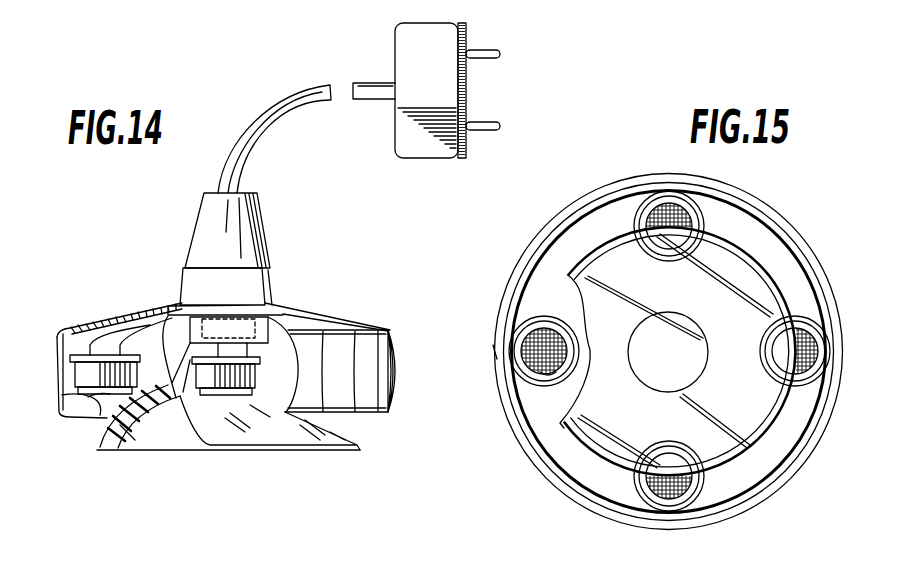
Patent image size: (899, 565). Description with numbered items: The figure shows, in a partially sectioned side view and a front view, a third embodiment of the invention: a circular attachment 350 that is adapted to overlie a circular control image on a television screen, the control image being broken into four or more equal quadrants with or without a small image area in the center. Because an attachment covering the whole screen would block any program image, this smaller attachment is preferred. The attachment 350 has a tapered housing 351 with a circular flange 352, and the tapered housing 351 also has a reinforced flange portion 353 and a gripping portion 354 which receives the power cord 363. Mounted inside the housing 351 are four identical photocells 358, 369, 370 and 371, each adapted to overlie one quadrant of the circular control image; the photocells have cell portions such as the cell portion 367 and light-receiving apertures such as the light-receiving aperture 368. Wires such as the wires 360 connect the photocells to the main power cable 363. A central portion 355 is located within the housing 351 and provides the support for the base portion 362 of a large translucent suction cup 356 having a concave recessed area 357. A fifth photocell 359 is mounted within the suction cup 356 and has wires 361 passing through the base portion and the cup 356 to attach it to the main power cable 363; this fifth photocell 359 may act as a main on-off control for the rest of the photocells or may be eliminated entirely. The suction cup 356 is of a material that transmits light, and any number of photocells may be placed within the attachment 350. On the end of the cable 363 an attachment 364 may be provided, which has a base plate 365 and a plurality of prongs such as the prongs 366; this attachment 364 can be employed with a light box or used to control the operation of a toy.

In FIG. 14, the attachment 350 is at (288, 296).
In FIG. 14, the tapered housing 351 is at (98, 300).
In FIG. 15, the tapered housing 351 is at (812, 236).
In FIG. 14, the circular flange 352 is at (66, 395).
In FIG. 14, the reinforced flange portion 353 is at (270, 272).
In FIG. 14, the gripping portion 354 is at (262, 221).
In FIG. 14, the central portion 355 is at (285, 323).
In FIG. 14, the suction cup 356 is at (291, 374).
In FIG. 15, the suction cup 356 is at (757, 458).
In FIG. 14, the concave recessed area 357 is at (128, 452).
In FIG. 14, the photocell 358 is at (72, 367).
In FIG. 15, the photocell 358 is at (553, 316).
In FIG. 14, the fifth photocell 359 is at (258, 395).
In FIG. 15, the fifth photocell 359 is at (692, 326).
In FIG. 14, the wires 360 is at (167, 312).
In FIG. 14, the wires 361 is at (249, 319).
In FIG. 14, the base portion 362 is at (210, 317).
In FIG. 14, the power cord 363 is at (243, 160).
In FIG. 14, the attachment 364 is at (396, 40).
In FIG. 14, the base plate 365 is at (468, 32).
In FIG. 14, the prongs 366 is at (498, 59).
In FIG. 14, the cell portion 367 is at (90, 397).
In FIG. 15, the cell portion 367 is at (501, 352).
In FIG. 15, the light-receiving aperture 368 is at (548, 374).
In FIG. 15, the photocell 369 is at (650, 515).
In FIG. 15, the photocell 370 is at (812, 378).
In FIG. 15, the photocell 371 is at (700, 205).